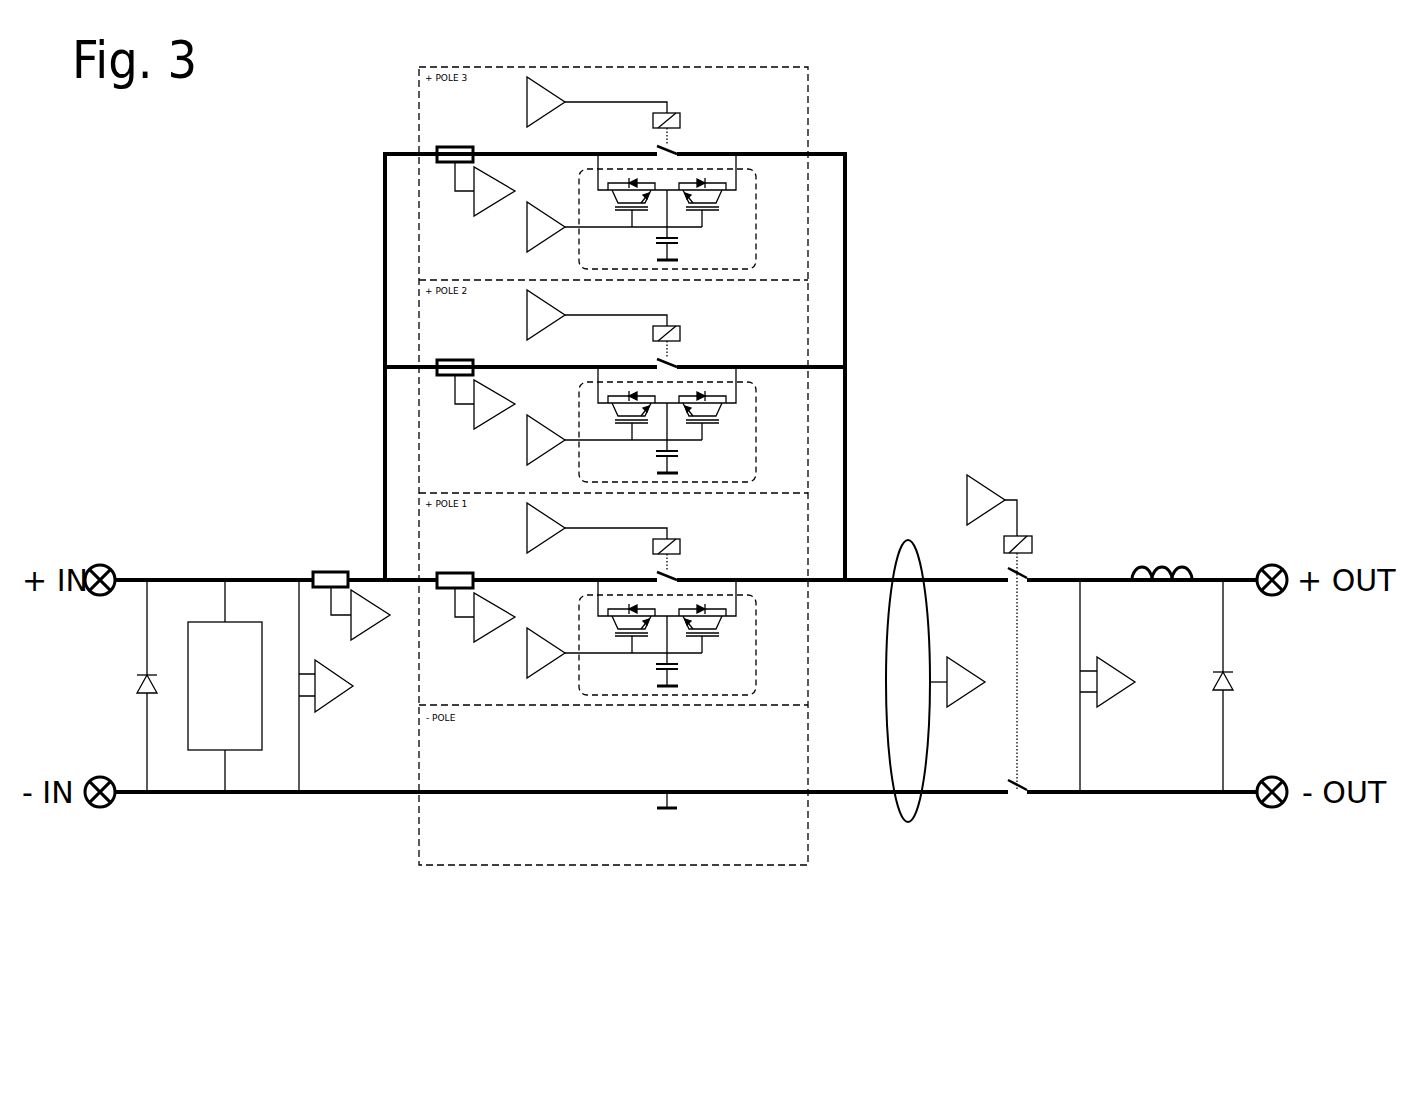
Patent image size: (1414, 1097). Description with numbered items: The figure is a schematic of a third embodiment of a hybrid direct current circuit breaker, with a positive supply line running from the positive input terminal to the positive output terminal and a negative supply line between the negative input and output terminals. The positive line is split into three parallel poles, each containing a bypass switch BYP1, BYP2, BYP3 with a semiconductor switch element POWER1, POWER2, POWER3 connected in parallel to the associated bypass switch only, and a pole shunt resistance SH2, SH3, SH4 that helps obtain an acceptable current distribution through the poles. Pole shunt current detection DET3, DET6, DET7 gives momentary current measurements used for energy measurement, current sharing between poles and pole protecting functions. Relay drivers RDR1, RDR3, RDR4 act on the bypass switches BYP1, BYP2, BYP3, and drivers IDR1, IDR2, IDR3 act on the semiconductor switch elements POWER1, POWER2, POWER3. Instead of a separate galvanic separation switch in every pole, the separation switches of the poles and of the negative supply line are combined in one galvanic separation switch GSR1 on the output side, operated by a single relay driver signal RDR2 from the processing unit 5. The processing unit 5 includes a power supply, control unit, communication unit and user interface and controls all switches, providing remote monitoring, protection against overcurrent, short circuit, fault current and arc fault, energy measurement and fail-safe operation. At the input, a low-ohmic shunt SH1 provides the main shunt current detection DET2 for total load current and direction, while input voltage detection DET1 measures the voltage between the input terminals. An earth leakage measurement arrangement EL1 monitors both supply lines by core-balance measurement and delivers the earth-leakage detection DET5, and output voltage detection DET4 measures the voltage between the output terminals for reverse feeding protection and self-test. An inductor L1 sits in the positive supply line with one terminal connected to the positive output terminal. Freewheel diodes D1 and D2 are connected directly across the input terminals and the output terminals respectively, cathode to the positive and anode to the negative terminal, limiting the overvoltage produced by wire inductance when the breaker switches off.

The processing unit 5 is at (250, 634).
The low-ohmic shunt SH1 is at (330, 570).
The shunt resistance SH2 is at (455, 570).
The shunt resistance SH3 is at (455, 357).
The shunt resistance SH4 is at (455, 144).
The input voltage detection DET1 is at (326, 686).
The main shunt current detection DET2 is at (360, 613).
The pole shunt current detection DET3 is at (485, 615).
The output voltage detection DET4 is at (957, 682).
The earth-leakage detection DET5 is at (1107, 686).
The pole shunt current detection DET6 is at (485, 402).
The pole shunt current detection DET7 is at (485, 189).
The relay driver RDR1 is at (597, 528).
The relay driver signal RDR2 is at (992, 505).
The relay driver RDR3 is at (597, 315).
The relay driver RDR4 is at (597, 102).
The bypass switch BYP1 is at (680, 559).
The additional bypass switch BYP2 is at (680, 346).
The additional bypass switch BYP3 is at (680, 133).
The IGBT driver IDR1 is at (614, 653).
The IGBT driver IDR2 is at (614, 440).
The IGBT driver IDR3 is at (614, 227).
The semiconductor switch element POWER1 is at (667, 637).
The additional semiconductor switch element POWER2 is at (667, 424).
The additional semiconductor switch element POWER3 is at (667, 211).
The earth leakage measurement arrangement EL1 is at (908, 674).
The galvanic separation switch GSR1 is at (1004, 663).
The inductor L1 is at (1162, 564).
The first diode D1 is at (135, 686).
The second diode D2 is at (1233, 686).